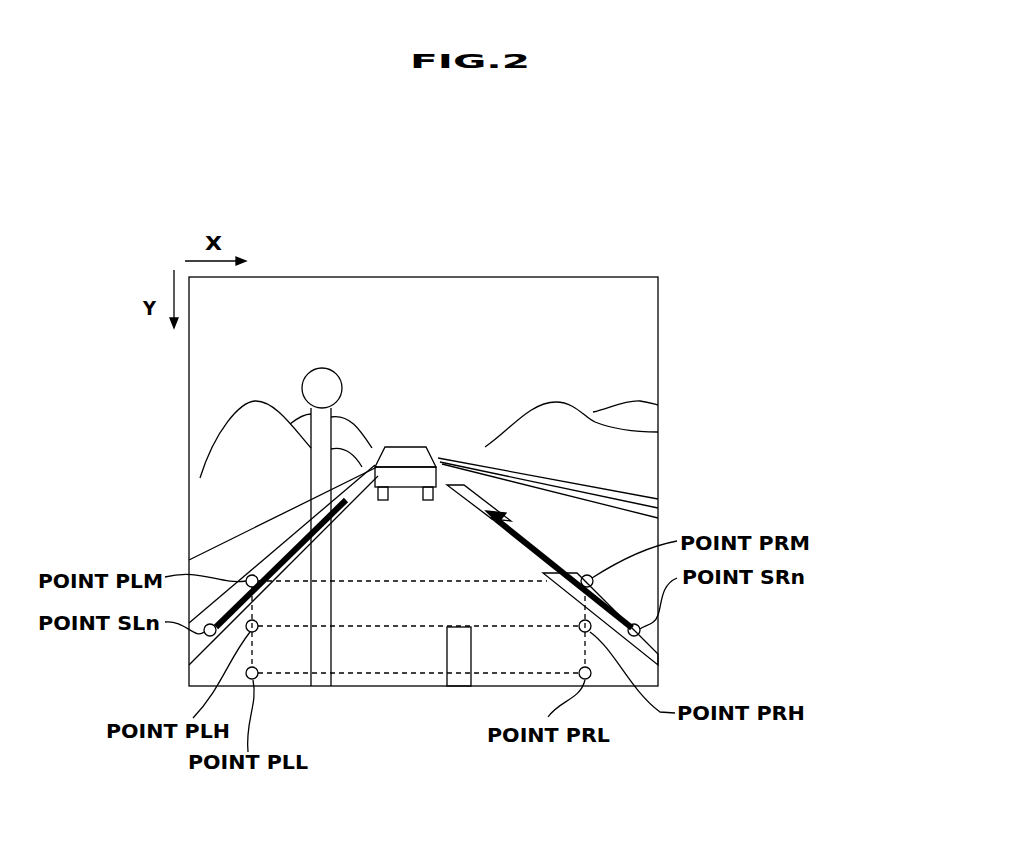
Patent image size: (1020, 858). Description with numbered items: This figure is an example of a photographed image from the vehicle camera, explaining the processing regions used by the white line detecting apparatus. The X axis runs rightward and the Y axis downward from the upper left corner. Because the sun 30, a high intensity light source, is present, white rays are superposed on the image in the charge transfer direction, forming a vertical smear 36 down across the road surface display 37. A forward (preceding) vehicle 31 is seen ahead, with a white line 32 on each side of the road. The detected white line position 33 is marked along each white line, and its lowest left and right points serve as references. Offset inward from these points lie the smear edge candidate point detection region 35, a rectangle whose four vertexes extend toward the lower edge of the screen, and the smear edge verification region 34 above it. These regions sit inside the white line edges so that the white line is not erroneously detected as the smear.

The sun 30 is at (322, 368).
The forward (preceding) vehicle 31 is at (405, 445).
The white line 32 is at (200, 652).
The detected white line position 33 is at (278, 562).
The smear edge verification region 34 is at (594, 630).
The smear edge candidate point detection region 35 is at (590, 632).
The smear 36 is at (340, 686).
The road surface display 37 is at (452, 686).